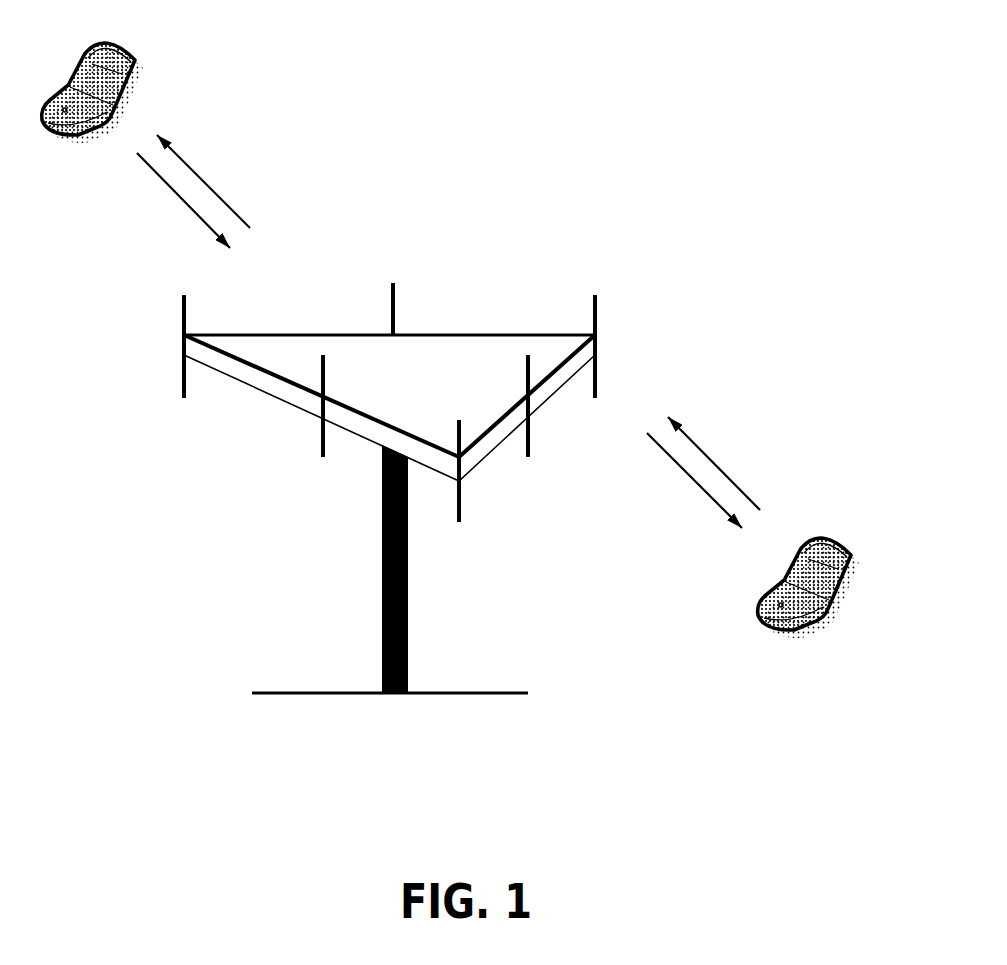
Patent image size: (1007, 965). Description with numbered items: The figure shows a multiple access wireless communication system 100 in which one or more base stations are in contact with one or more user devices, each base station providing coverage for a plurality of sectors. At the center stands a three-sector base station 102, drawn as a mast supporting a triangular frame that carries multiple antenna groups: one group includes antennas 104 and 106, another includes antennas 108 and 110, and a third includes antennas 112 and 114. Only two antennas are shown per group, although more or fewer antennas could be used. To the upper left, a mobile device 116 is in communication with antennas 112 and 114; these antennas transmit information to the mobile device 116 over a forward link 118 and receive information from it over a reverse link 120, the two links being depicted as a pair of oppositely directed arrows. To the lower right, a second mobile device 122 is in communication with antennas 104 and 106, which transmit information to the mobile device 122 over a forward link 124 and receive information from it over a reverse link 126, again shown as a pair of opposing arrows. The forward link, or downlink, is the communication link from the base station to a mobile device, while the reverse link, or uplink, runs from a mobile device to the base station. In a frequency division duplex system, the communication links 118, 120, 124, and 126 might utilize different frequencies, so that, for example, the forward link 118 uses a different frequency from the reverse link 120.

The multiple access wireless communication system 100 is at (752, 122).
The three-sector base station 102 is at (435, 694).
The antenna 104 is at (596, 310).
The antenna 106 is at (529, 440).
The antenna 108 is at (460, 505).
The antenna 110 is at (322, 450).
The antenna 112 is at (185, 310).
The antenna 114 is at (394, 298).
The mobile device 116 is at (128, 45).
The forward link 118 is at (207, 182).
The reverse link 120 is at (176, 190).
The mobile device 122 is at (845, 540).
The forward link 124 is at (700, 488).
The reverse link 126 is at (700, 452).